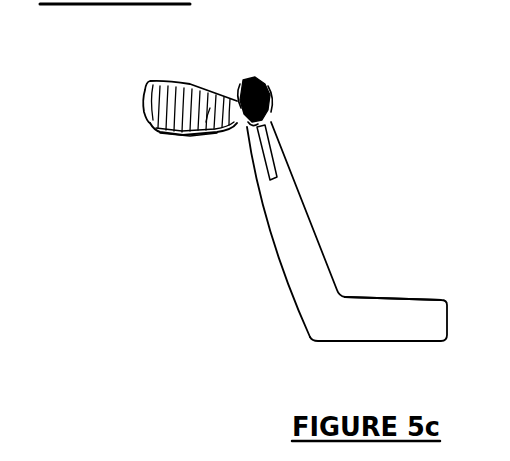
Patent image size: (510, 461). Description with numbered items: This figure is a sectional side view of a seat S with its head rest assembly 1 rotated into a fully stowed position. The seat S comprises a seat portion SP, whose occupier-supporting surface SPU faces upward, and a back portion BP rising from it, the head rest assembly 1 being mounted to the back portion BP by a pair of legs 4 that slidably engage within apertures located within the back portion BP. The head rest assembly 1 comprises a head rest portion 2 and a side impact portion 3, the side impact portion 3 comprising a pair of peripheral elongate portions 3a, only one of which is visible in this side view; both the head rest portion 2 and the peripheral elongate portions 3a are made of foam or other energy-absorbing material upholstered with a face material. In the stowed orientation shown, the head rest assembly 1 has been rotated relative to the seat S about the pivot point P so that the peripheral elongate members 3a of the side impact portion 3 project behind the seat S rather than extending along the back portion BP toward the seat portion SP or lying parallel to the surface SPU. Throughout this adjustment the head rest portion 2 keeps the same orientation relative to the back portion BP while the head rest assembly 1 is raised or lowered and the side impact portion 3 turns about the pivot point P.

The head rest assembly 1 is at (204, 93).
The head rest portion 2 is at (243, 85).
The side impact portion 3 is at (143, 115).
The peripheral elongate portion 3a is at (193, 137).
The leg 4 is at (273, 158).
The pivot point P is at (266, 97).
The seat S is at (332, 231).
The back portion BP is at (298, 260).
The seat portion SP is at (380, 331).
The occupier-supporting surface of the seat portion SPU is at (367, 295).